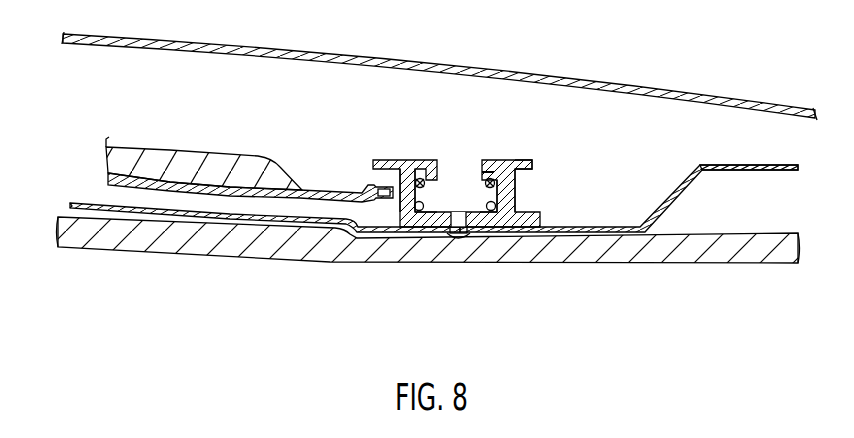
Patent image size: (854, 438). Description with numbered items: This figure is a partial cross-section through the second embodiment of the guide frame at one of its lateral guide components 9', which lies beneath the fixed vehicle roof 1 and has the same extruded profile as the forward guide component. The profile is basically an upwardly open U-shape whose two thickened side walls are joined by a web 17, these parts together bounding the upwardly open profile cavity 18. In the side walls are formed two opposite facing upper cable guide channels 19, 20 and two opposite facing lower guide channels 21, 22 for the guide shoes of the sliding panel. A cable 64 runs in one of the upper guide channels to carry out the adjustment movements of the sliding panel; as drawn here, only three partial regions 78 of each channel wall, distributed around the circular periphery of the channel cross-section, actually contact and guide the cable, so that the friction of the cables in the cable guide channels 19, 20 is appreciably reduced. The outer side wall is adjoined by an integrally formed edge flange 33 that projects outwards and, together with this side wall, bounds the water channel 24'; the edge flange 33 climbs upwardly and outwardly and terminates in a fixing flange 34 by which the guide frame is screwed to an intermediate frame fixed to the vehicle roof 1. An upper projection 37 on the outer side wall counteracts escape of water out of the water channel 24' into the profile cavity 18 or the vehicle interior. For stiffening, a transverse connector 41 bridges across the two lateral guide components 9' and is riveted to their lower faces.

The fixed vehicle roof 1 is at (600, 77).
The lateral guide component 9' is at (251, 148).
The upper cable guide channel 19 is at (415, 160).
The profile cavity 18 is at (467, 170).
The upper cable guide channel 20 is at (497, 162).
The upper projection 37 is at (530, 162).
The cable 64 is at (506, 184).
The partial regions 78 is at (398, 183).
The transverse connector 41 is at (89, 204).
The edge flange 33 is at (672, 196).
The fixing flange 34 is at (738, 163).
The water channel 24' is at (491, 193).
The lower guide channel 21 is at (418, 212).
The web 17 is at (440, 226).
The lower guide channel 22 is at (494, 214).